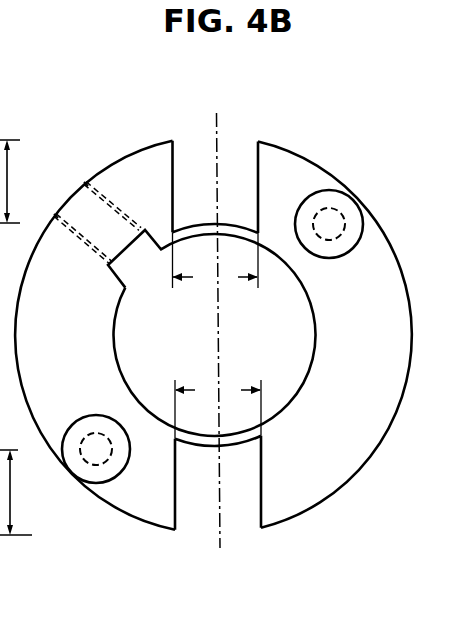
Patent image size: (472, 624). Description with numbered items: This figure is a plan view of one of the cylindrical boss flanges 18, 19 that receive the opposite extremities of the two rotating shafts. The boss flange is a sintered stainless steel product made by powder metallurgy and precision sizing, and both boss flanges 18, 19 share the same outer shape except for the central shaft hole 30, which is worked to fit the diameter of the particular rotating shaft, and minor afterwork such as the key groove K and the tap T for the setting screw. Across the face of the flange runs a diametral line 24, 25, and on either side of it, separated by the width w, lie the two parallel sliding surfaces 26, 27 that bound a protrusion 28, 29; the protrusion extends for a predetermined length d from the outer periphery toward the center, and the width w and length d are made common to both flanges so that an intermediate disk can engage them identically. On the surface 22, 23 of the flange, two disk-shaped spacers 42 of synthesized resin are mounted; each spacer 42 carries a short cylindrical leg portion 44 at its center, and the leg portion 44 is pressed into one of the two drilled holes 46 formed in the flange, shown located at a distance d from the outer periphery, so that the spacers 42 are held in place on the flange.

The boss flange 18 is at (218, 360).
The boss flange 19 is at (303, 512).
The surface 22 is at (221, 336).
The surface 23 is at (297, 441).
The diametral line 24 is at (302, 308).
The diametral line 25 is at (217, 128).
The sliding surface 26 is at (233, 356).
The sliding surface 27 is at (170, 190).
The protrusion 28 is at (290, 299).
The protrusion 29 is at (195, 173).
The shaft hole 30 is at (316, 352).
The spacer 42 is at (365, 232).
The leg portion 44 is at (336, 190).
The drilled hole 46 is at (339, 186).
The key groove K is at (130, 257).
The tap T is at (127, 222).